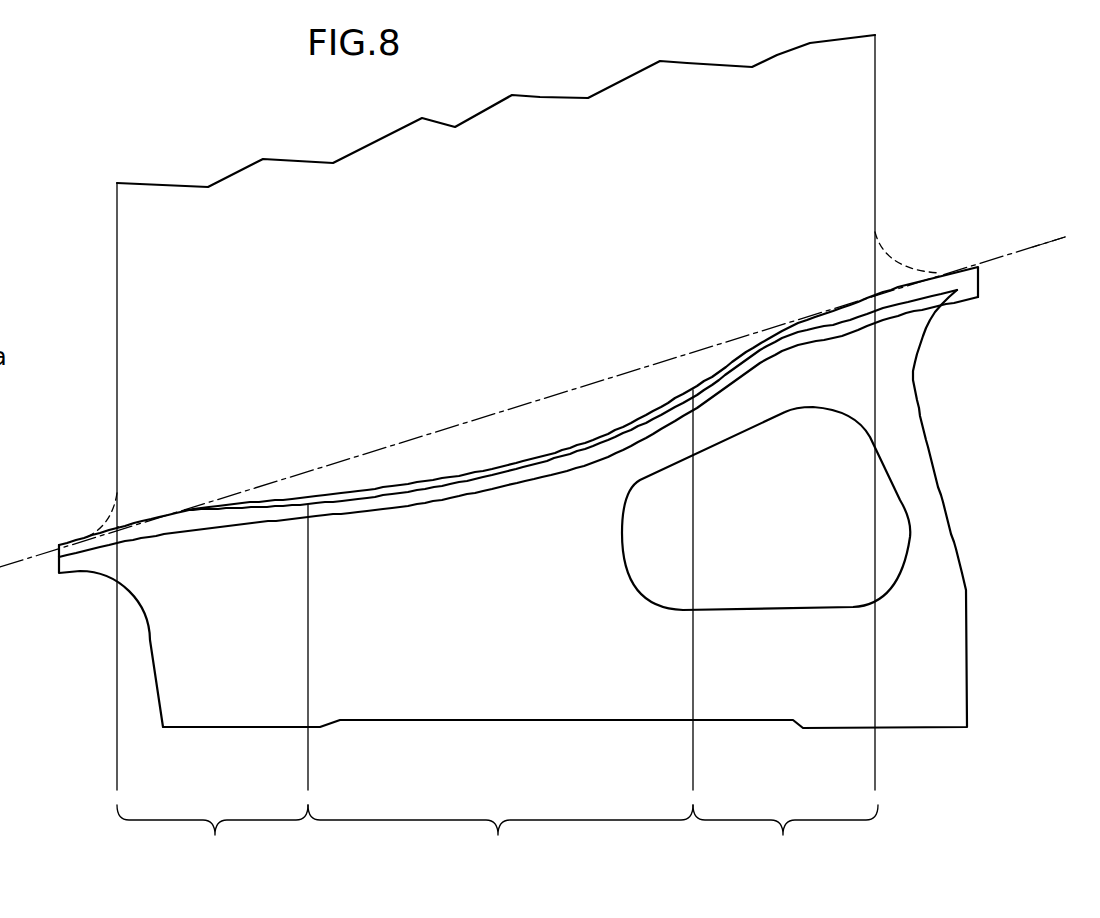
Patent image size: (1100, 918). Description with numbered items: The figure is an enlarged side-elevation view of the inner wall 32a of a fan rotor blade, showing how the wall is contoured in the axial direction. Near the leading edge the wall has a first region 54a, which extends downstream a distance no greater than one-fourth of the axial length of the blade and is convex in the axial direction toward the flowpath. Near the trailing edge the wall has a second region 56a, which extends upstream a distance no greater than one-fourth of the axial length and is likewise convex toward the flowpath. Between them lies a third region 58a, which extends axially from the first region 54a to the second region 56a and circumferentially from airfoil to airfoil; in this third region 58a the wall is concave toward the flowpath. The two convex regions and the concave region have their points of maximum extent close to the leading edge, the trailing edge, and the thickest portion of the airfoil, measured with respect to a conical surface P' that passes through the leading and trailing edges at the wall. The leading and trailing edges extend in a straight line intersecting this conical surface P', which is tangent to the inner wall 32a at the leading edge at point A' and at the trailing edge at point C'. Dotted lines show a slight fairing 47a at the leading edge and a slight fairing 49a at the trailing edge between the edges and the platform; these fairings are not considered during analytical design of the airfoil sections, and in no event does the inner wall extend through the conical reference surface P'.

The inner wall 32a is at (940, 273).
The fairing 47a is at (103, 520).
The fairing 49a is at (900, 258).
The first region 54a is at (212, 686).
The third region 58a is at (500, 629).
The second region 56a is at (785, 834).
The tangent point A' is at (151, 484).
The tangent point C' is at (836, 261).
The conical surface P' is at (1057, 214).